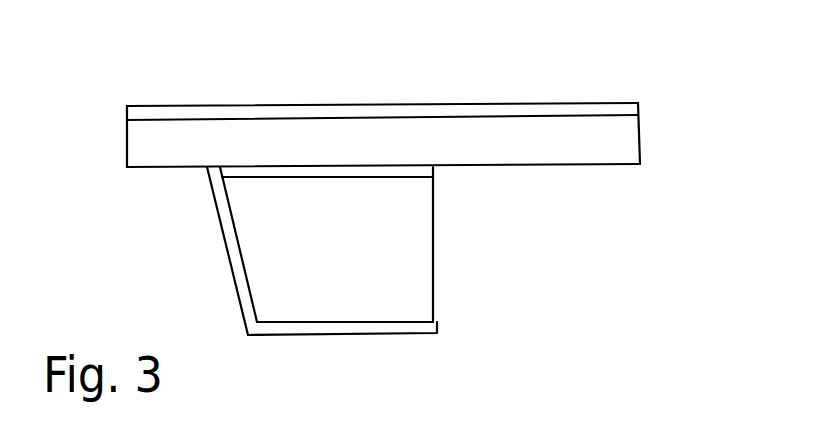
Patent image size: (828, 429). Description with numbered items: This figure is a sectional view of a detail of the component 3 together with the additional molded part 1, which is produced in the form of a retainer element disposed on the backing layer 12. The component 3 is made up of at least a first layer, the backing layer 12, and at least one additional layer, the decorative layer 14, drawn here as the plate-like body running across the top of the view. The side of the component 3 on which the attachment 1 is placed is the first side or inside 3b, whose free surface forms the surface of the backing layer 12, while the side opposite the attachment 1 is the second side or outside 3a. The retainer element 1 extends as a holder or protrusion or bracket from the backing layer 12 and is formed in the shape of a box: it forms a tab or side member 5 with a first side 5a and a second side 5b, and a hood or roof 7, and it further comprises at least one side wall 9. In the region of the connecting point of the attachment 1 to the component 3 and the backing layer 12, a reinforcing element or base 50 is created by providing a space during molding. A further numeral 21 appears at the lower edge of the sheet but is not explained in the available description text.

The molded part 1 is at (403, 224).
The component 3 is at (425, 131).
The outside 3a is at (545, 100).
The inside 3b is at (588, 166).
The tab 5 is at (170, 251).
The first side 5a is at (226, 222).
The second side 5b is at (215, 200).
The roof 7 is at (397, 329).
The side wall 9 is at (306, 289).
The backing layer 12 is at (632, 160).
The decorative layer 14 is at (607, 106).
The reference 21 is at (589, 424).
The base 50 is at (433, 170).